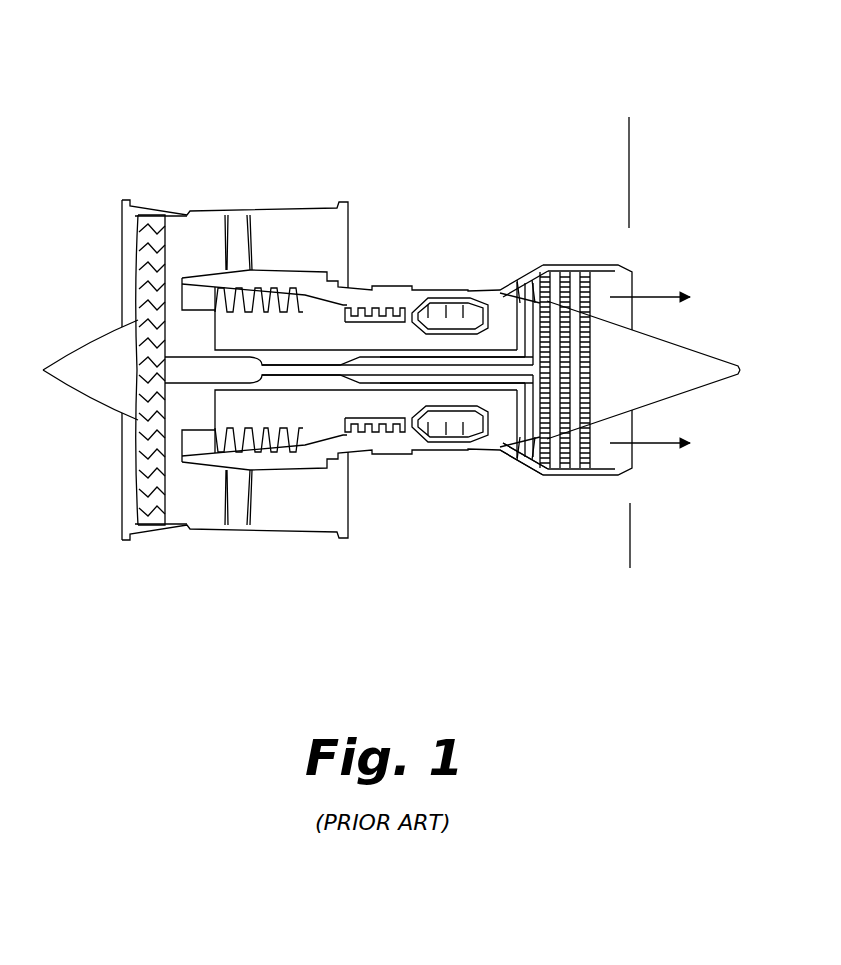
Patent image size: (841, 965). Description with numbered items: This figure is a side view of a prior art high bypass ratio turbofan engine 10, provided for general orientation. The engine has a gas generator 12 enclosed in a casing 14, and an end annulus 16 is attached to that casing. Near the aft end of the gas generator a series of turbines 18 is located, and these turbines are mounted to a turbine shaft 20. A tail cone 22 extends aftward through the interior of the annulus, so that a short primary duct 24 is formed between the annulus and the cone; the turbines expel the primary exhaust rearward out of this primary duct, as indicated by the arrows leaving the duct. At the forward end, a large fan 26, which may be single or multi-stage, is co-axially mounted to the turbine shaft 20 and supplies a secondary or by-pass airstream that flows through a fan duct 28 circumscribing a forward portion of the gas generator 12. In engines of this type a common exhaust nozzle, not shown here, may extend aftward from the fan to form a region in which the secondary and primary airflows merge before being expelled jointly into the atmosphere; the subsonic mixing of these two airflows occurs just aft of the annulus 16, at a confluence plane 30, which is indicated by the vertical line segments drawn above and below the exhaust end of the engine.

The high bypass ratio turbofan engine 10 is at (463, 106).
The gas generator 12 is at (433, 290).
The casing 14 is at (530, 478).
The end annulus 16 is at (636, 470).
The turbines 18 is at (562, 270).
The turbine shaft 20 is at (411, 372).
The tail cone 22 is at (704, 377).
The primary duct 24 is at (633, 280).
The fan 26 is at (208, 212).
The fan duct 28 is at (324, 228).
The confluence plane 30 is at (629, 155).